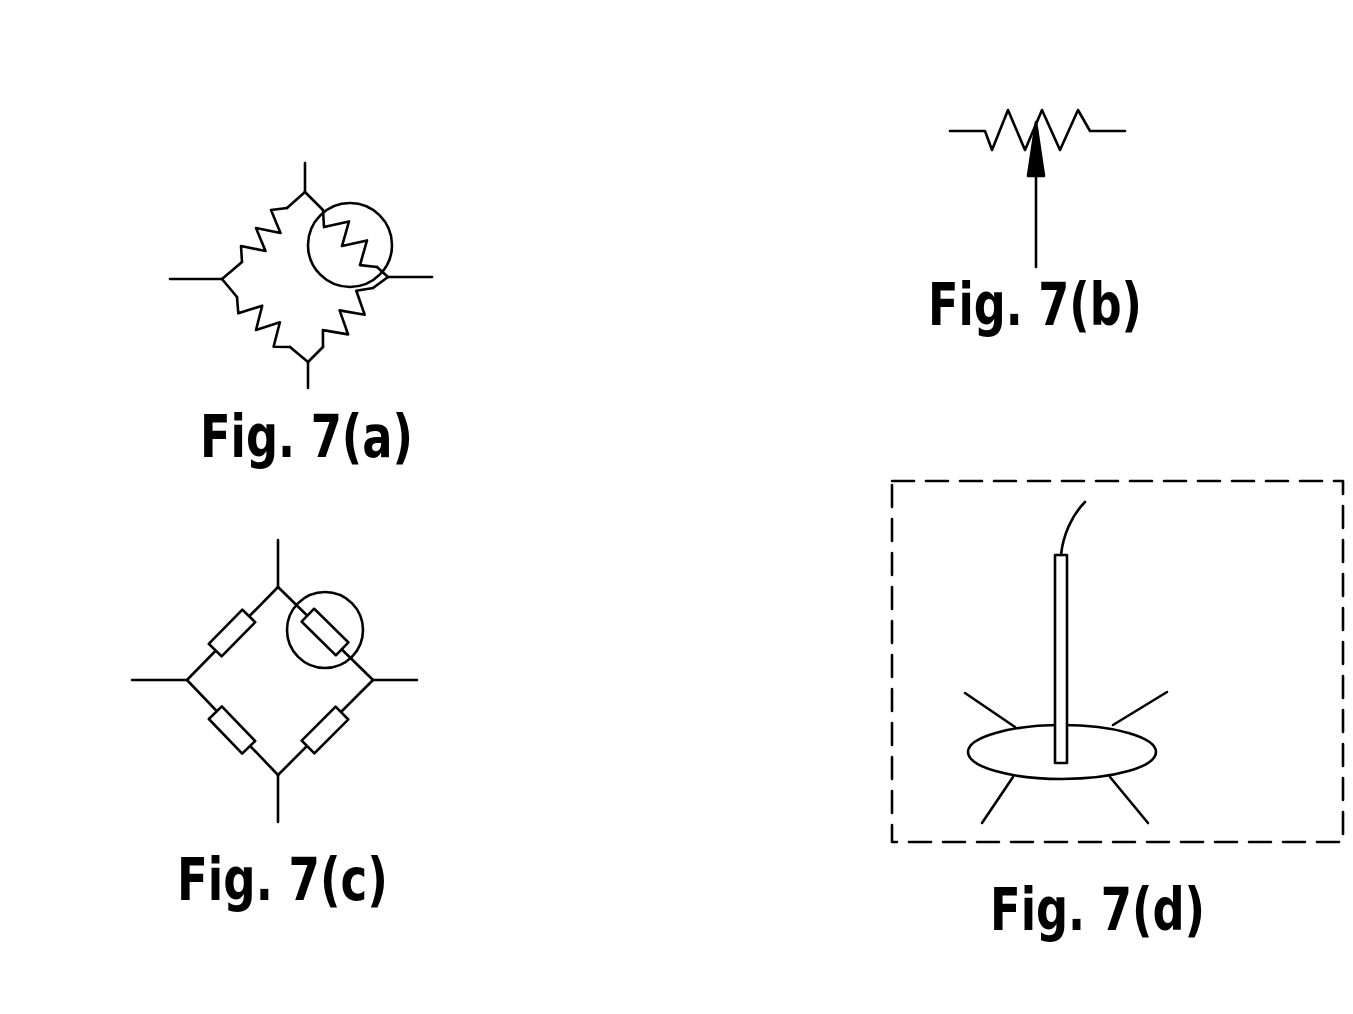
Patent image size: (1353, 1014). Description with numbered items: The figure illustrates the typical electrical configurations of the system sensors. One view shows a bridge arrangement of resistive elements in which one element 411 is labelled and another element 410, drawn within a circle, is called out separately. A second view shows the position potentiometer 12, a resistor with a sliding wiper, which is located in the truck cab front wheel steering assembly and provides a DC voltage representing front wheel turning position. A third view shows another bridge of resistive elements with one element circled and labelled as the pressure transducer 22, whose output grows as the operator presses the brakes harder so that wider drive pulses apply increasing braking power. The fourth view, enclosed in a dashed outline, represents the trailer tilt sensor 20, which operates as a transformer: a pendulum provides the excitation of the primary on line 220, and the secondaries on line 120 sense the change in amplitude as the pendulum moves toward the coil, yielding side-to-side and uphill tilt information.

In FIG. 7A, the bridge resistor 411 is at (162, 223).
In FIG. 7A, the variable resistance sensing element 410 is at (468, 203).
In FIG. 7B, the position potentiometer 12 is at (1111, 188).
In FIG. 7C, the pressure transducer 22 is at (402, 606).
In FIG. 7D, the trailer tilt sensor 20 is at (1036, 617).
In FIG. 7D, the primary excitation line 220 is at (1147, 632).
In FIG. 7D, the secondary sense line 120 is at (1146, 754).